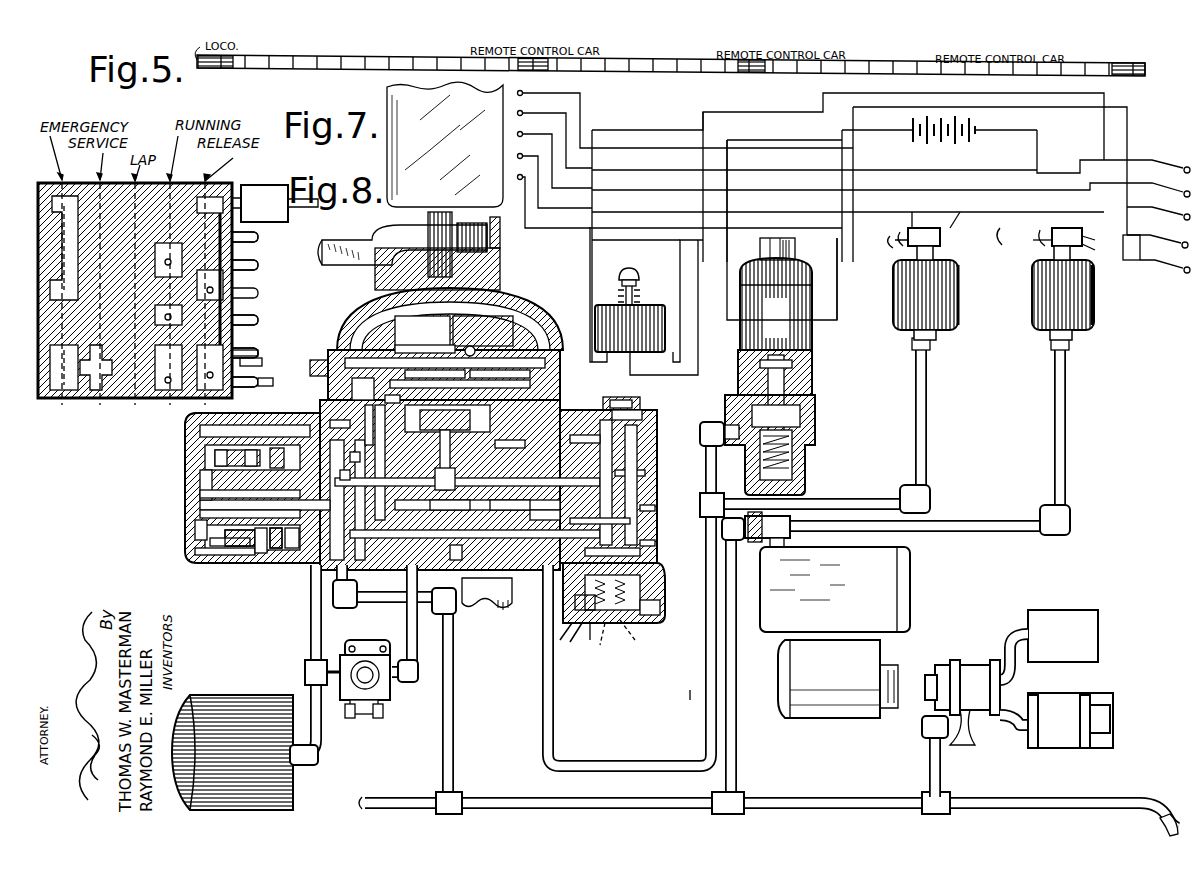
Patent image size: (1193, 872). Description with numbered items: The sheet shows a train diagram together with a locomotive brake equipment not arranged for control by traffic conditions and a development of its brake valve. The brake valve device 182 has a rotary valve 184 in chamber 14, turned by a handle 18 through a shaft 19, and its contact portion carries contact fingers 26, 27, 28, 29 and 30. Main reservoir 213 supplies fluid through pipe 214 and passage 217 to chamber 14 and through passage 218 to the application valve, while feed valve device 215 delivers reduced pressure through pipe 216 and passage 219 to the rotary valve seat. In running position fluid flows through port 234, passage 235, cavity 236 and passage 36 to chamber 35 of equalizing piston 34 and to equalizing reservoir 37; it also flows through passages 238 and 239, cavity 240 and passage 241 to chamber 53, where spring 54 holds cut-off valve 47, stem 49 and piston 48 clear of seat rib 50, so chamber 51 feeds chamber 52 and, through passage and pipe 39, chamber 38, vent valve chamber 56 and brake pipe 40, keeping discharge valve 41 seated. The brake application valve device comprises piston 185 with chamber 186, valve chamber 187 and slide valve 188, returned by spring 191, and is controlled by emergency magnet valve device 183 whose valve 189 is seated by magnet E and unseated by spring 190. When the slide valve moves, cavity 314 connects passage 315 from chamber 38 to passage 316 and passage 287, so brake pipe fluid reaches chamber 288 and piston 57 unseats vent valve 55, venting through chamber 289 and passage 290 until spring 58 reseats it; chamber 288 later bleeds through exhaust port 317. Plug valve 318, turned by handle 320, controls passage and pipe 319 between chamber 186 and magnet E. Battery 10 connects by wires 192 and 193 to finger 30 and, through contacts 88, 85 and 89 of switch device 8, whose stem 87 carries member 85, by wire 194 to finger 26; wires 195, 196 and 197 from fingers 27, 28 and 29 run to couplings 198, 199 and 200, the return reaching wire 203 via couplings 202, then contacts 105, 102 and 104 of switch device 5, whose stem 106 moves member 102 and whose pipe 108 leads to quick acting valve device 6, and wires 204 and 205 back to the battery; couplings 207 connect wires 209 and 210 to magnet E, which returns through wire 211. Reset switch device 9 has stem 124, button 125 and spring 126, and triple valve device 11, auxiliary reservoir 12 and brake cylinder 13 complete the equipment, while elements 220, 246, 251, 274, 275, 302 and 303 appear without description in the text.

The switch device 5 is at (1031, 272).
The quick acting valve device 6 is at (912, 560).
The switch device 8 is at (957, 280).
The reset switch device 9 is at (607, 303).
The electric battery 10 is at (960, 142).
The triple valve device 11 is at (935, 706).
The auxiliary reservoir 12 is at (1060, 614).
The brake cylinder 13 is at (1105, 705).
The rotary valve chamber 14 is at (265, 196).
The handle 18 is at (338, 243).
The shaft 19 is at (452, 268).
The contact finger 26 is at (521, 93).
The contact finger 27 is at (521, 113).
The contact finger 28 is at (526, 129).
The contact finger 29 is at (520, 151).
The contact finger 30 is at (554, 194).
The equalizing piston 34 is at (440, 412).
The equalizing piston chamber 35 is at (401, 393).
The passage and pipe 36 is at (666, 468).
The equalizing reservoir 37 is at (470, 583).
The brake pipe discharge valve chamber 38 is at (454, 484).
The passage and pipe 39 is at (262, 262).
The brake pipe 40 is at (737, 580).
The brake pipe discharge valve 41 is at (440, 478).
The cut-off valve 47 is at (351, 433).
The cut-off valve piston 48 is at (240, 445).
The stem 49 is at (262, 445).
The seat rib 50 is at (280, 446).
The cut-off valve chamber 51 is at (361, 425).
The chamber 52 is at (275, 382).
The cut-off valve piston chamber 53 is at (186, 433).
The spring 54 is at (188, 419).
The vent valve 55 is at (260, 563).
The vent valve chamber 56 is at (278, 563).
The vent valve piston 57 is at (210, 540).
The spring 58 is at (296, 563).
The movable contact member 85 is at (937, 228).
The piston stem 87 is at (905, 250).
The fixed contact 88 is at (913, 228).
The fixed contact 89 is at (962, 226).
The movable contact member 102 is at (1030, 242).
The fixed contact 104 is at (1058, 228).
The fixed contact 105 is at (1086, 244).
The piston stem 106 is at (1088, 250).
The pipe 108 is at (1067, 425).
The stem 124 is at (642, 291).
The button 125 is at (628, 266).
The spring 126 is at (638, 284).
The brake valve device 182 is at (346, 293).
The emergency magnet valve device 183 is at (780, 260).
The rotary valve 184 is at (485, 345).
The brake application valve piston 185 is at (650, 598).
The piston chamber 186 is at (650, 612).
The valve chamber 187 is at (650, 543).
The slide valve 188 is at (648, 508).
The valve 189 is at (805, 378).
The spring 190 is at (815, 452).
The spring 191 is at (618, 632).
The wire 192 is at (897, 135).
The wire 193 is at (575, 240).
The wire 194 is at (586, 118).
The wire 195 is at (806, 168).
The wire 196 is at (806, 188).
The wire 197 is at (806, 209).
The coupling 198 is at (1147, 158).
The coupling 199 is at (1158, 181).
The coupling 200 is at (1158, 205).
The coupling 202 is at (1157, 232).
The wire 203 is at (1140, 262).
The wire 204 is at (1000, 246).
The wire 205 is at (1038, 158).
The coupling 207 is at (1166, 258).
The wire 209 is at (1127, 138).
The wire 210 is at (838, 283).
The wire 211 is at (730, 268).
The main reservoir 213 is at (230, 705).
The main reservoir pipe 214 is at (305, 670).
The feed valve device 215 is at (342, 650).
The pipe 216 is at (416, 626).
The passage 217 is at (262, 234).
The passage 218 is at (499, 371).
The passage 219 is at (262, 268).
The spring 220 is at (645, 578).
The port 234 is at (388, 345).
The passage 235 is at (258, 380).
The cavity 236 is at (642, 456).
The passage 238 is at (262, 325).
The passage 239 is at (648, 556).
The cavity 240 is at (640, 522).
The passage 241 is at (200, 472).
The passage 246 is at (250, 348).
The fitting 251 is at (768, 548).
The passage 274 is at (454, 507).
The pipe 275 is at (420, 582).
The passage 287 is at (200, 494).
The vent valve piston chamber 288 is at (200, 514).
The chamber 289 is at (195, 551).
The exhaust passage 290 is at (240, 563).
The passage 302 is at (640, 480).
The passage 303 is at (510, 507).
The cavity 314 is at (650, 430).
The passage 315 is at (648, 444).
The passage 316 is at (593, 482).
The exhaust port 317 is at (195, 525).
The plug valve 318 is at (590, 632).
The passage and pipe 319 is at (560, 616).
The handle 320 is at (565, 632).